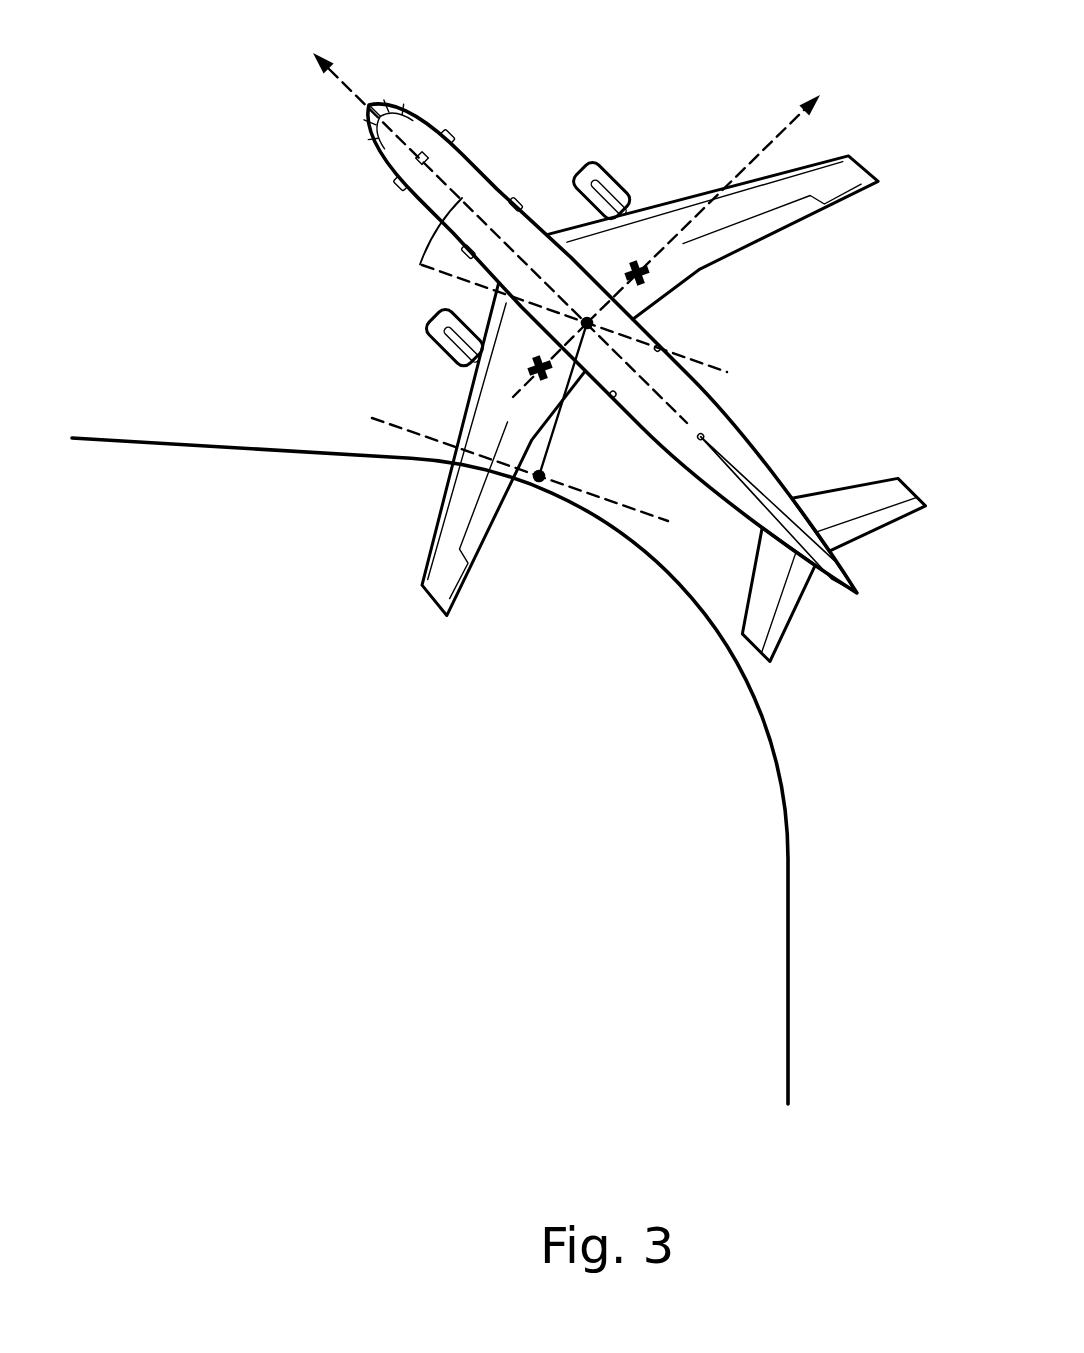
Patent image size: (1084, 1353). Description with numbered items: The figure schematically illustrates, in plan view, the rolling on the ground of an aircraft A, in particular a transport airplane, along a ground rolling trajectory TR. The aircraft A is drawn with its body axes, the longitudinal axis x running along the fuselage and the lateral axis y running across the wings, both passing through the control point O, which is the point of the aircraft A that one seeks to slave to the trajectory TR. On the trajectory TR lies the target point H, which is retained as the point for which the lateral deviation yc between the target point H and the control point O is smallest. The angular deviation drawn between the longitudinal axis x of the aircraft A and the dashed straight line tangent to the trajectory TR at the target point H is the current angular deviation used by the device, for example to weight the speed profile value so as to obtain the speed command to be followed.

The aircraft A is at (477, 165).
The ground rolling trajectory TR is at (212, 447).
The control point of the aircraft O is at (590, 322).
The target point H is at (539, 478).
The longitudinal axis of the aircraft x is at (500, 220).
The lateral axis of the aircraft y is at (719, 209).
The lateral deviation yc is at (532, 370).